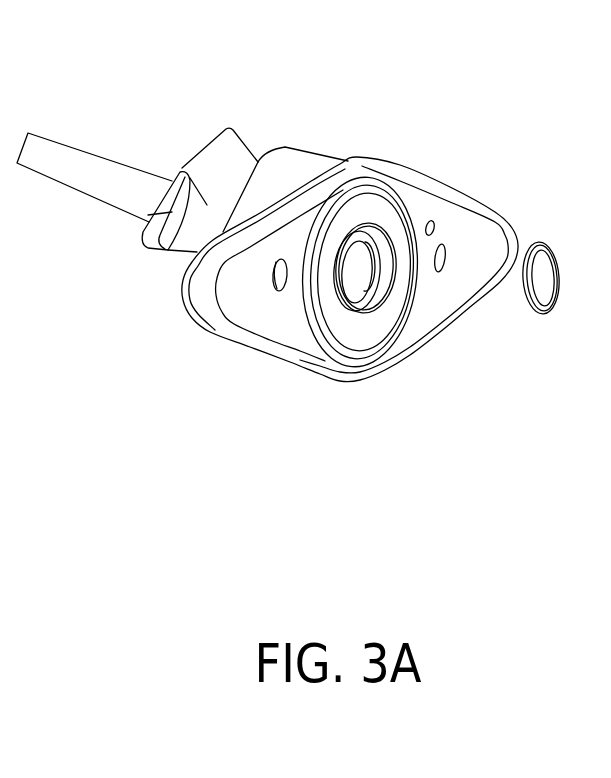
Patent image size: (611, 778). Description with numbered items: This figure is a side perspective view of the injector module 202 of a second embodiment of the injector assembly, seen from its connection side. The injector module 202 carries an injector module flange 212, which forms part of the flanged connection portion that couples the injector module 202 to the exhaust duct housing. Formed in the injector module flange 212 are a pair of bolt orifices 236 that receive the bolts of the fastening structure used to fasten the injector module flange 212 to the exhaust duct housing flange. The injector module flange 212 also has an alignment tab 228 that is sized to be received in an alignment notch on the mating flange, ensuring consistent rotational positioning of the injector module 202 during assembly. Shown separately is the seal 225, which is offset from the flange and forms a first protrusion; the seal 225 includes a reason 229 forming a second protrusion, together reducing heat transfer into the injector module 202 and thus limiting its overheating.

The injector module 202 is at (268, 219).
The injector module flange 212 is at (429, 197).
The seal 225 is at (559, 292).
The alignment tab 228 is at (394, 256).
The reason 229 is at (369, 302).
The bolt orifices 236 is at (446, 258).